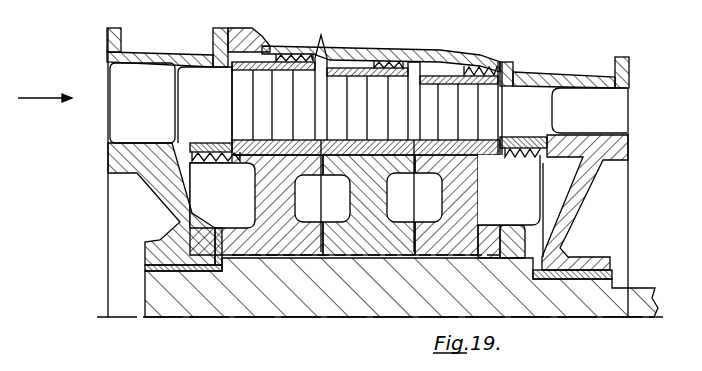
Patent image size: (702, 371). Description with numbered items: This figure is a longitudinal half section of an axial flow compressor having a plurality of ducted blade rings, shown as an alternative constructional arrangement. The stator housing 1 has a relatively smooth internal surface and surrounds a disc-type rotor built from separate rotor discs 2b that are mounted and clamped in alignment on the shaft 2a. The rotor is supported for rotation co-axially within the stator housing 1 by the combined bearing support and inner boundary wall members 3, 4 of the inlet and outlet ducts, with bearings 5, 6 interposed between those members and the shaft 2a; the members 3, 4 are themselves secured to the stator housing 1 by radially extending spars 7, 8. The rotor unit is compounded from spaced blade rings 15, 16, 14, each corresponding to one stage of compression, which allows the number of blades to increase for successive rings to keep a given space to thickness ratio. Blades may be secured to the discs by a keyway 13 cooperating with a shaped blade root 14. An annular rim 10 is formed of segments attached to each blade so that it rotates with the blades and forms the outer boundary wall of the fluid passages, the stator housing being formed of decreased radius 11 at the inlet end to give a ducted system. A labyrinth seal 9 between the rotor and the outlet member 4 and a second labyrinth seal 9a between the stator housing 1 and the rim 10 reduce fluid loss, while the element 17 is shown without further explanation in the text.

The stator housing 1 is at (412, 56).
The shaft 2a is at (365, 317).
The rotor discs 2b is at (287, 238).
The combined bearing support and inner boundary wall member 3 is at (163, 202).
The combined bearing support and inner boundary wall member 4 is at (587, 206).
The bearing 5 is at (145, 267).
The bearing 6 is at (607, 278).
The radially extending spar 7 is at (160, 77).
The radially extending spar 8 is at (583, 100).
The labyrinth seal 9 is at (208, 147).
The second labyrinth seal 9a is at (295, 57).
The annular rim 10 is at (321, 42).
The decreased radius portion of stator housing 11 is at (193, 66).
The keyway 13 is at (258, 153).
The blade root 14 is at (499, 137).
The blade ring 15 is at (230, 70).
The blade ring 16 is at (357, 86).
The ring segment 17 is at (447, 97).